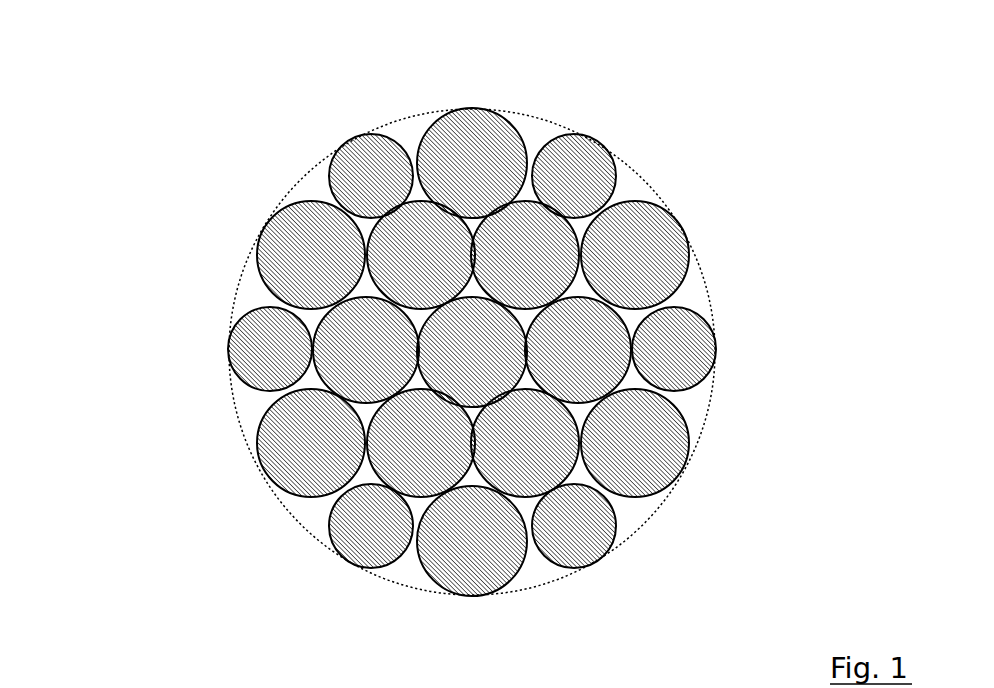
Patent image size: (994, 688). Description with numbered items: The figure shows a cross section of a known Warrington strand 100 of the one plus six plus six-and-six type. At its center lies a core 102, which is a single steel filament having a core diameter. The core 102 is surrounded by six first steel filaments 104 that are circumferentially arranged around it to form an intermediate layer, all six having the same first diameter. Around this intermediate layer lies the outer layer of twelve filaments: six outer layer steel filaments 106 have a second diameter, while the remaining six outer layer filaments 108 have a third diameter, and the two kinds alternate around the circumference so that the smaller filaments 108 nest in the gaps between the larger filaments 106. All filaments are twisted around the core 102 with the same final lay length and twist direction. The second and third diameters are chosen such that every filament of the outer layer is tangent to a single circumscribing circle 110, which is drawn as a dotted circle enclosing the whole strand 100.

The Warrington strand 100 is at (183, 122).
The core 102 is at (332, 308).
The first steel filaments 104 is at (238, 326).
The outer layer steel filaments of second diameter 106 is at (718, 239).
The outer layer filaments of third diameter 108 is at (667, 153).
The circumscribing circle 110 is at (562, 352).